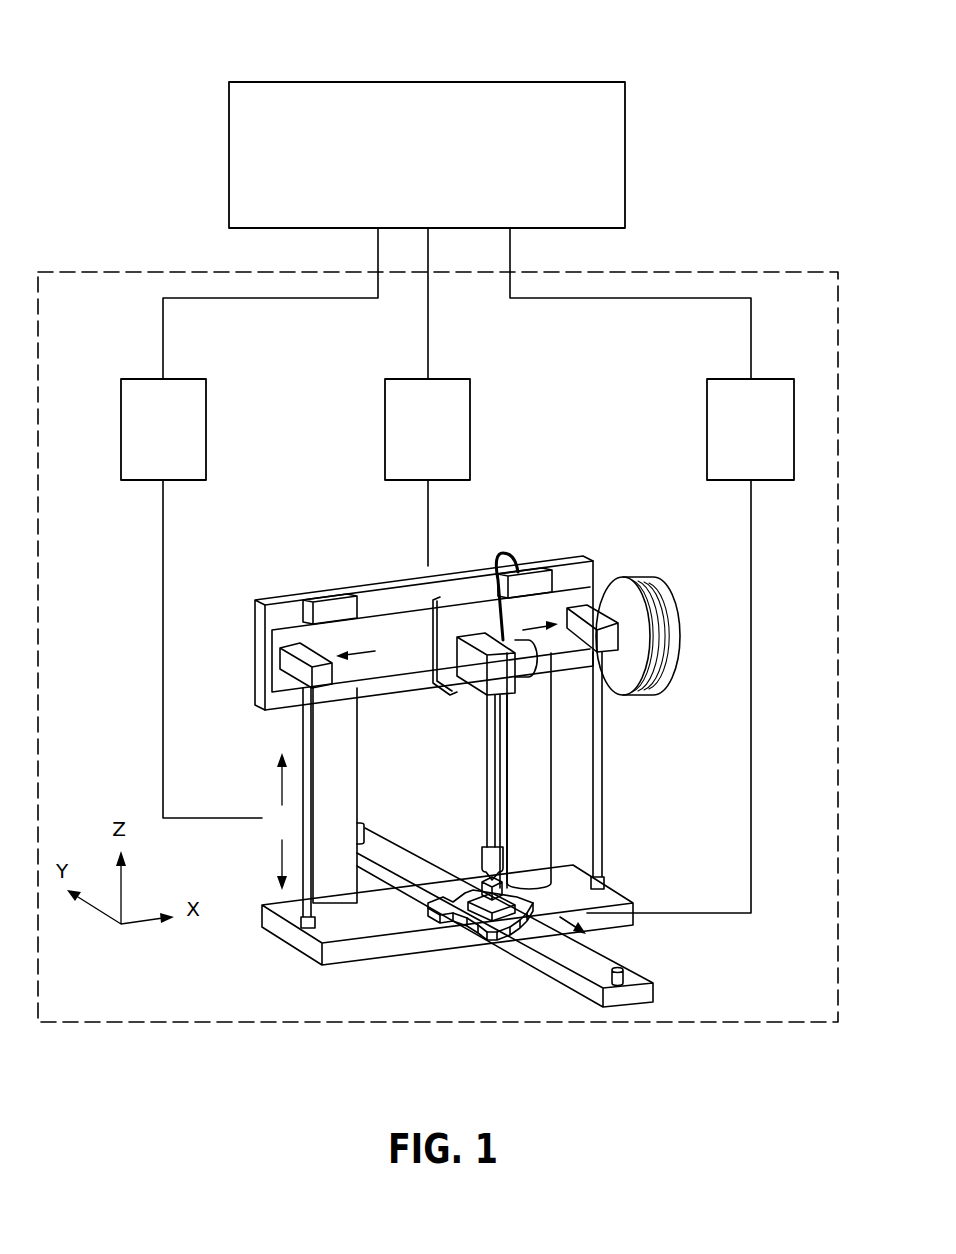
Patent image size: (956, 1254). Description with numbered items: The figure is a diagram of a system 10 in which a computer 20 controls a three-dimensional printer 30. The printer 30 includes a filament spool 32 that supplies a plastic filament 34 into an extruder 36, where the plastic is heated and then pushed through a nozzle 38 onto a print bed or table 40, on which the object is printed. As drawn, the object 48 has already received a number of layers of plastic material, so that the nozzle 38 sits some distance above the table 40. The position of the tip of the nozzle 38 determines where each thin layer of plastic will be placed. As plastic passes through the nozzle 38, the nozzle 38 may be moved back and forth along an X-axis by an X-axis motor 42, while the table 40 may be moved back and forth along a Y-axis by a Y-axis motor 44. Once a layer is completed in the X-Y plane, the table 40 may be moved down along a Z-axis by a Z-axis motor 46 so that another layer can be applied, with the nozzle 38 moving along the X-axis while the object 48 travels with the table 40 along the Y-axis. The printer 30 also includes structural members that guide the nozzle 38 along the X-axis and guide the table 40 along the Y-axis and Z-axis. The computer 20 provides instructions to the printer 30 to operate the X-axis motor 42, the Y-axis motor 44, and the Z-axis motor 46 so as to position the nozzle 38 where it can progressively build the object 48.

The system 10 is at (153, 88).
The computer 20 is at (553, 82).
The three-dimensional printer 30 is at (752, 272).
The filament spool 32 is at (650, 574).
The plastic filament 34 is at (497, 558).
The extruder 36 is at (485, 637).
The nozzle 38 is at (483, 857).
The print bed or table 40 is at (480, 950).
The X-axis motor 42 is at (457, 379).
The Y-axis motor 44 is at (782, 379).
The Z-axis motor 46 is at (195, 379).
The object 48 is at (514, 876).